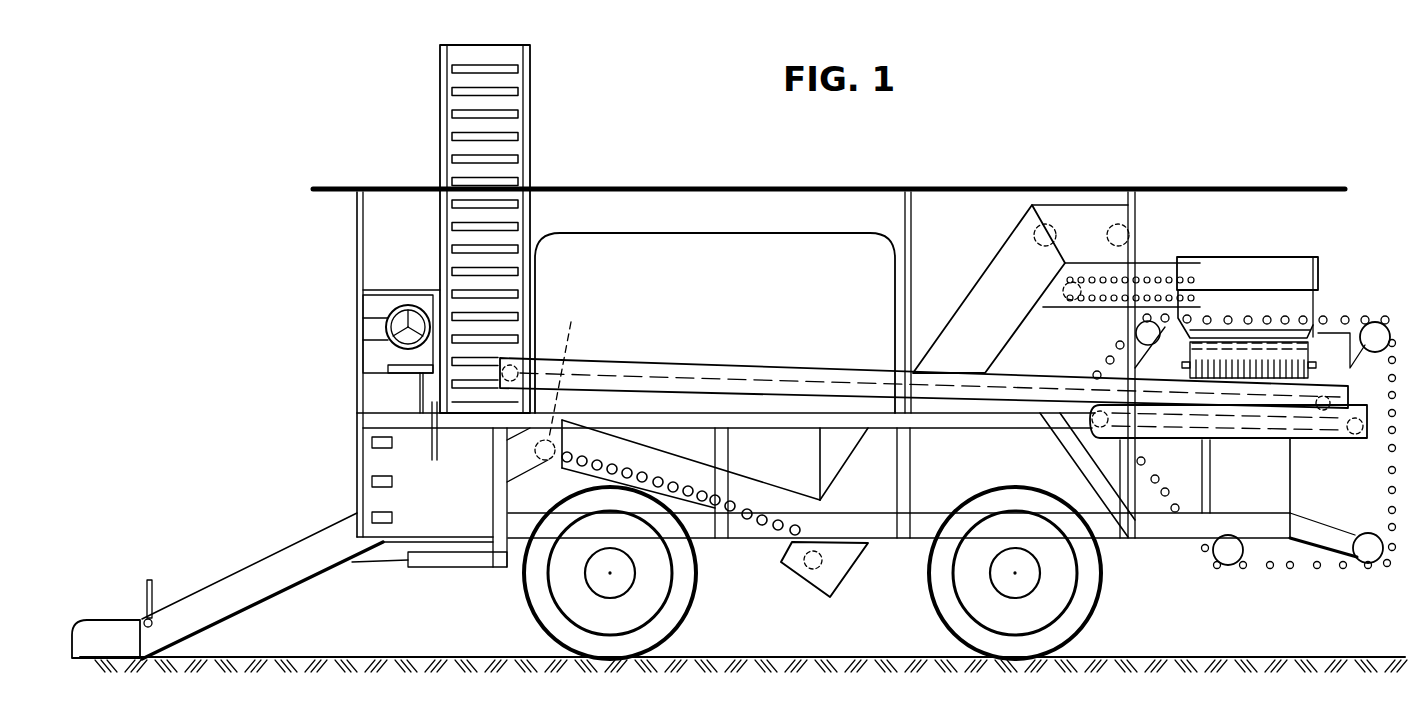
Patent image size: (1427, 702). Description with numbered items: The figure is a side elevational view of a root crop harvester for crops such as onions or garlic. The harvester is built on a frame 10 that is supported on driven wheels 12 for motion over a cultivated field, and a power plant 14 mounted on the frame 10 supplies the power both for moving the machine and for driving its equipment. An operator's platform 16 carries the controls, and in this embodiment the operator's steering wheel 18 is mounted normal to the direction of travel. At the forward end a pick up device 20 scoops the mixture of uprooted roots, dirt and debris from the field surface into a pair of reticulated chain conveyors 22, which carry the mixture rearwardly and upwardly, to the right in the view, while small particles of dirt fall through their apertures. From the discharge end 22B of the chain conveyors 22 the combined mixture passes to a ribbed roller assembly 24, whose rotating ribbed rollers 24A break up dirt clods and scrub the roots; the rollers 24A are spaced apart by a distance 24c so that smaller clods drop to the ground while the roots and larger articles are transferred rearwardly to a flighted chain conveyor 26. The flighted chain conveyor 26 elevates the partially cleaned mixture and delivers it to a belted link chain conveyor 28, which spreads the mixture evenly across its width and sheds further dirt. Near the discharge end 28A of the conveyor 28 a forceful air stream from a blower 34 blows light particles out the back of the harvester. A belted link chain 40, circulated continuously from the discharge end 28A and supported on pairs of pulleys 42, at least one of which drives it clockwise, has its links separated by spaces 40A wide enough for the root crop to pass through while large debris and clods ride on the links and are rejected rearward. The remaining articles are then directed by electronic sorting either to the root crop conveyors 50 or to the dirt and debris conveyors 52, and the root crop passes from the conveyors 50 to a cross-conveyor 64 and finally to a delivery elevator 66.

The frame 10 is at (877, 528).
The driven wheels 12 is at (668, 620).
The power plant 14 is at (690, 290).
The operator's platform 16 is at (370, 377).
The steering wheel 18 is at (392, 318).
The pick up device 20 is at (135, 595).
The reticulated chain conveyors 22 is at (265, 590).
The discharge end 22B is at (573, 367).
The ribbed roller assembly 24 is at (762, 492).
The ribbed rollers 24A is at (568, 462).
The distance 24c is at (638, 455).
The flighted chain conveyor 26 is at (988, 298).
The belted link chain conveyor 28 is at (1080, 303).
The discharge end 28A is at (1215, 286).
The blower 34 is at (1115, 353).
The belted link chain 40 is at (1290, 568).
The spaces 40A is at (1338, 320).
The pulleys 42 is at (1136, 333).
The root crop conveyors 50 is at (690, 372).
The dirt and debris conveyors 52 is at (1293, 430).
The cross-conveyor 64 is at (473, 385).
The delivery elevator 66 is at (505, 217).